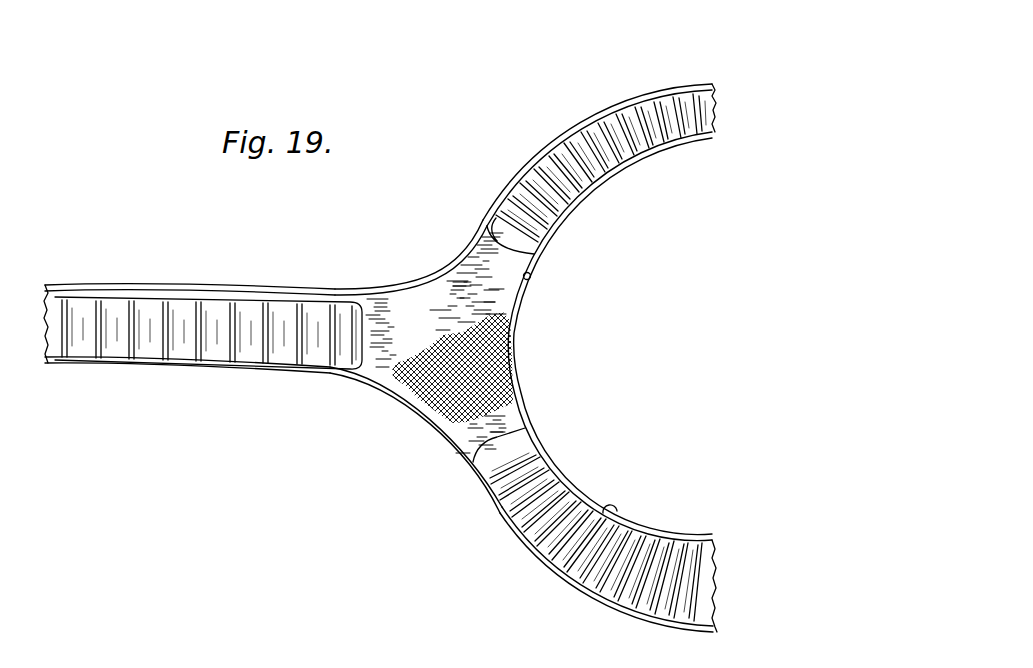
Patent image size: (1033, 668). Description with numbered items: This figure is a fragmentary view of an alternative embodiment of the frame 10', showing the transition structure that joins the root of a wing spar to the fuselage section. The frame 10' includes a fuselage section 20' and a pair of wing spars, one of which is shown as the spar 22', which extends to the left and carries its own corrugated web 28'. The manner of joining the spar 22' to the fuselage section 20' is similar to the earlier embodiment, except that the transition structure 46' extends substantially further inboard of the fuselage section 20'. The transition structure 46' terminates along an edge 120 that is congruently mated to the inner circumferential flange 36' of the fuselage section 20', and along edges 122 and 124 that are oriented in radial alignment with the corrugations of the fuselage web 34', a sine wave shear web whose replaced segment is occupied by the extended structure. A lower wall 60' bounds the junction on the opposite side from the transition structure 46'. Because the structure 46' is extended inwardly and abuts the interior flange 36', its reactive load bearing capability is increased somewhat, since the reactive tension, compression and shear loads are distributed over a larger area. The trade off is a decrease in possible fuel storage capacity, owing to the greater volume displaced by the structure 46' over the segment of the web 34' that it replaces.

The frame 10' is at (439, 293).
The fuselage section 20' is at (600, 326).
The spar 22' is at (189, 303).
The corrugated insert of straight section 28' is at (208, 357).
The fuselage web 34' is at (601, 151).
The inner circumferential flange 36' is at (596, 537).
The transition structure 46' is at (411, 266).
The lower junction wall 60' is at (416, 440).
The edge 120 is at (523, 276).
The edge 122 is at (494, 230).
The edge 124 is at (478, 462).